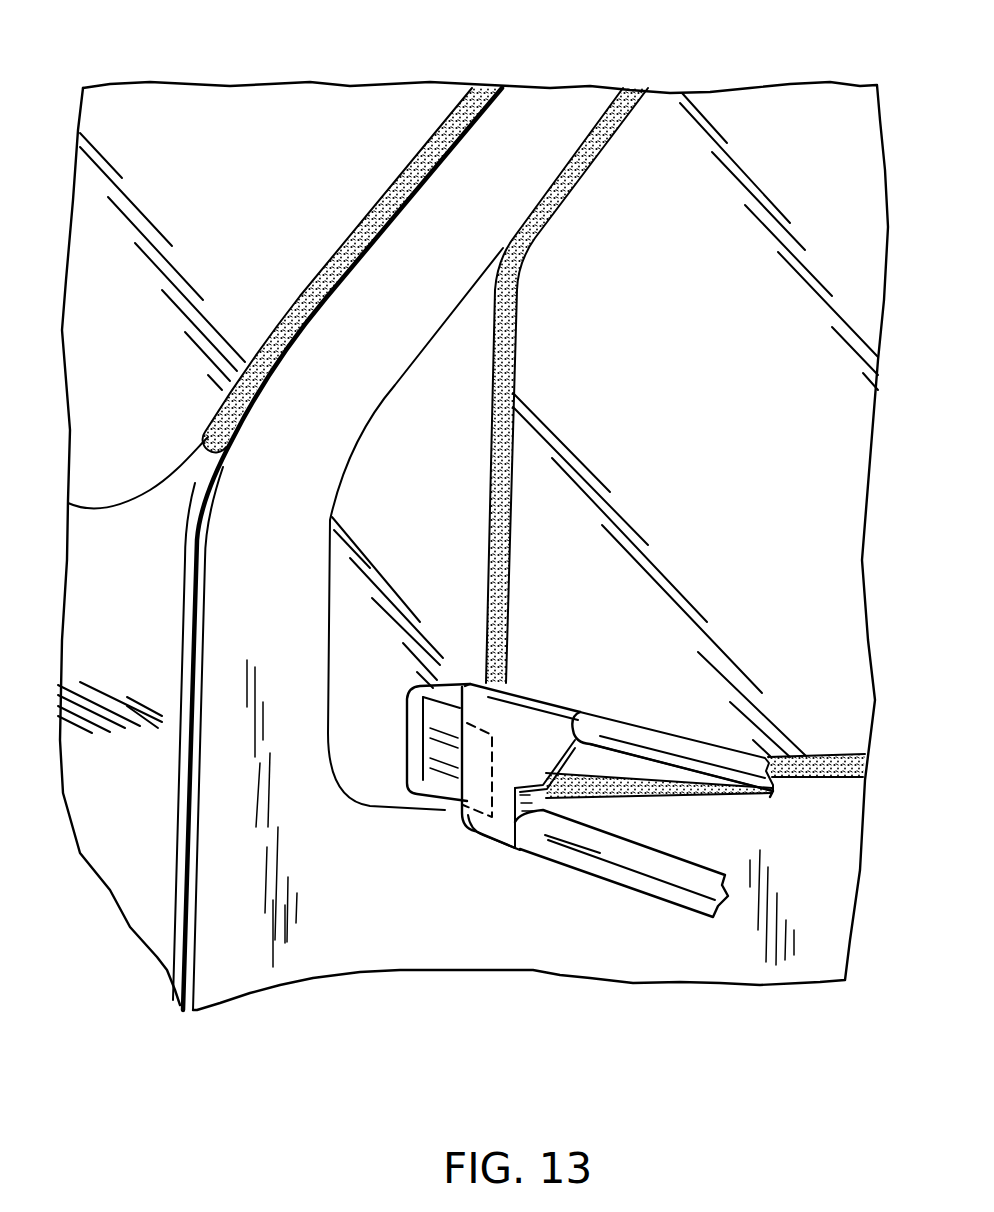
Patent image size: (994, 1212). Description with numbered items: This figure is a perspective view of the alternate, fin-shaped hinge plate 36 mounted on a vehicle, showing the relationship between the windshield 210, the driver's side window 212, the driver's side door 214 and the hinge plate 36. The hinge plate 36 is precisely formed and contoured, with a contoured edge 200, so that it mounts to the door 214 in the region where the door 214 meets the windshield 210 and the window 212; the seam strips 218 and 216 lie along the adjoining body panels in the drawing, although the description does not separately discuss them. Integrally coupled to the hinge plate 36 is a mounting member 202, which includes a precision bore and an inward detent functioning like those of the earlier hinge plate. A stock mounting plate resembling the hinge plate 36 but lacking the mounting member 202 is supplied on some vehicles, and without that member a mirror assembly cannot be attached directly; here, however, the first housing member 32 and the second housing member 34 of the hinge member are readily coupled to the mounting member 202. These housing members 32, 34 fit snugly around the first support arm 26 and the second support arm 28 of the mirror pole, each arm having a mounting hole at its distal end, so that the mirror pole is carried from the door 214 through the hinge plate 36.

The windshield 210 is at (273, 115).
The sealed seam strip 218 is at (540, 117).
The vertical seam strip 216 is at (489, 549).
The driver's side window 212 is at (693, 359).
The contoured edge 200 is at (343, 430).
The hinge plate 36 is at (370, 757).
The mounting member 202 is at (442, 777).
The second housing member 34 is at (525, 720).
The first housing member 32 is at (488, 828).
The second support arm 28 is at (617, 733).
The first support arm 26 is at (603, 847).
The driver's side door 214 is at (723, 945).